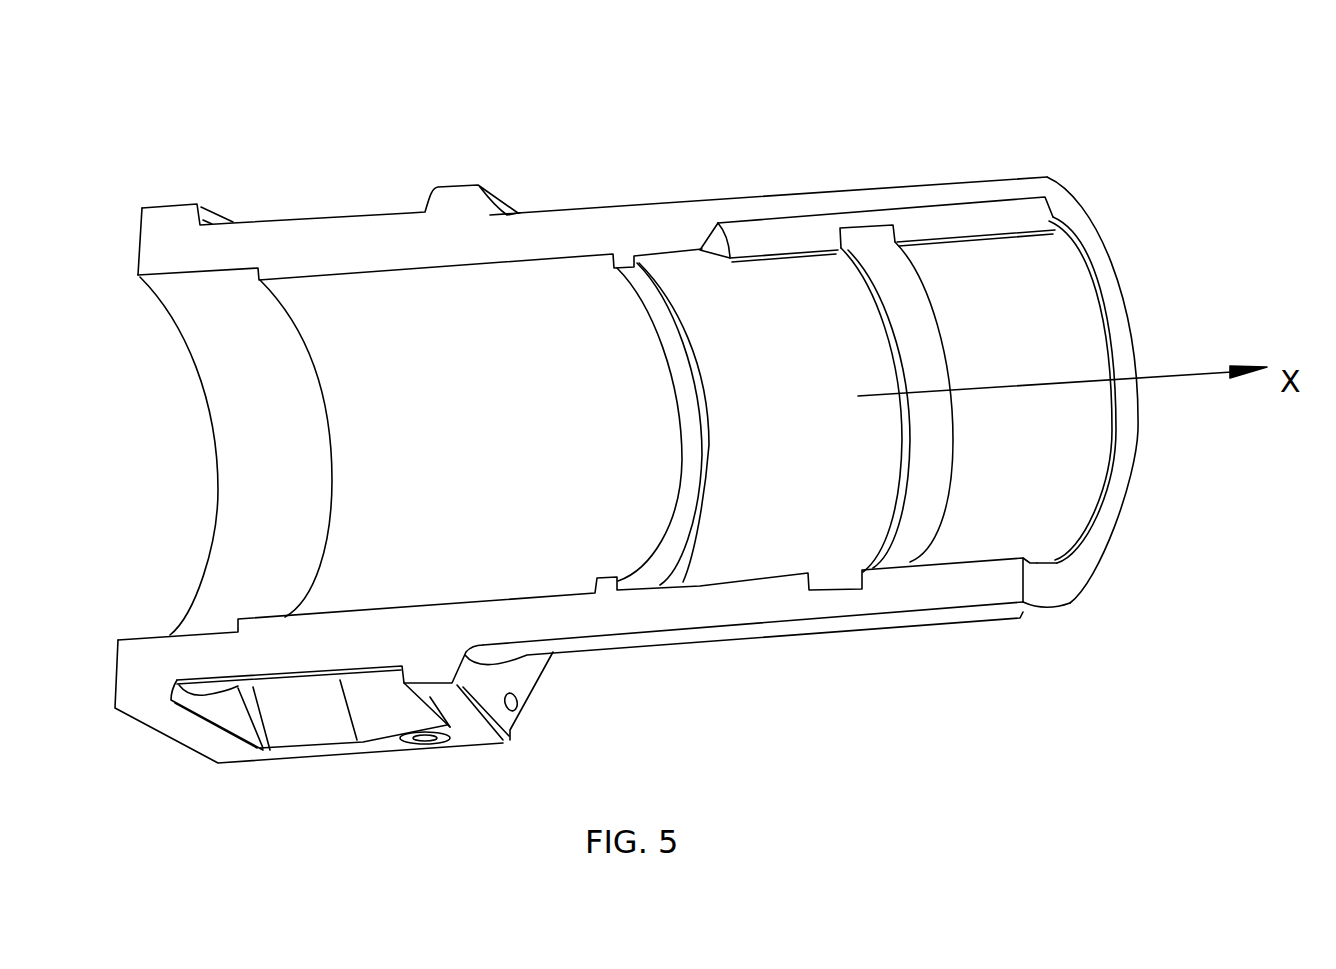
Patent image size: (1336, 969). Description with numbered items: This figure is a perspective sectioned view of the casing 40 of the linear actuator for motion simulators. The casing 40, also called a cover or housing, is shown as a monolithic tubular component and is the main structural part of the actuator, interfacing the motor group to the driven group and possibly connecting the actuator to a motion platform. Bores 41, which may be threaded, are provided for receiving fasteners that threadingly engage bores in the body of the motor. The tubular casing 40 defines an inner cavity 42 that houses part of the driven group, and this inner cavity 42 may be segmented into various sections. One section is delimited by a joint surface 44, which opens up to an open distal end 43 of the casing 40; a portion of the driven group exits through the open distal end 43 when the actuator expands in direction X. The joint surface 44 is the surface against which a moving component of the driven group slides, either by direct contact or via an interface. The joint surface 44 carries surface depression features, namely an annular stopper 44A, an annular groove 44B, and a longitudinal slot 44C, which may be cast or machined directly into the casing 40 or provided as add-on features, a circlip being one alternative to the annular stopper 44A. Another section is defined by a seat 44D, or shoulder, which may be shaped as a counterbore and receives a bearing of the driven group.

The casing 40 is at (933, 125).
The bores 41 is at (517, 700).
The inner cavity 42 is at (1047, 323).
The open distal end 43 is at (1115, 513).
The joint surface 44 is at (495, 441).
The annular stopper 44A is at (673, 560).
The annular groove 44B is at (840, 581).
The longitudinal slot 44C is at (983, 220).
The seat 44D is at (328, 468).